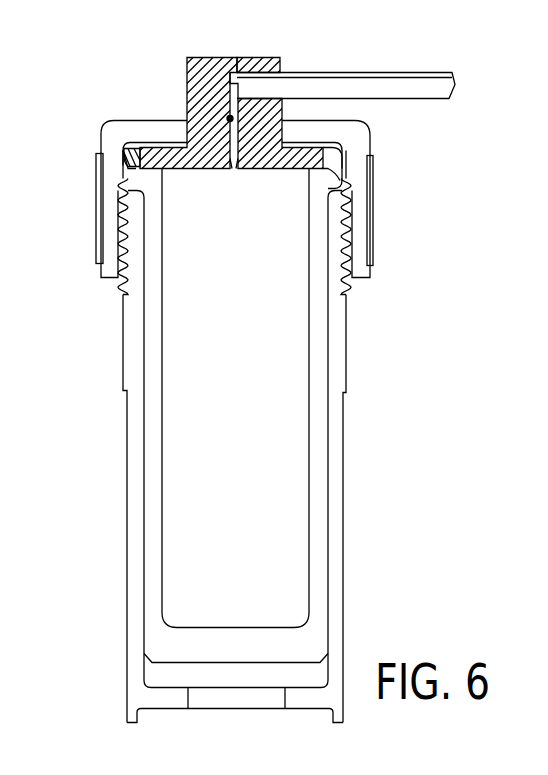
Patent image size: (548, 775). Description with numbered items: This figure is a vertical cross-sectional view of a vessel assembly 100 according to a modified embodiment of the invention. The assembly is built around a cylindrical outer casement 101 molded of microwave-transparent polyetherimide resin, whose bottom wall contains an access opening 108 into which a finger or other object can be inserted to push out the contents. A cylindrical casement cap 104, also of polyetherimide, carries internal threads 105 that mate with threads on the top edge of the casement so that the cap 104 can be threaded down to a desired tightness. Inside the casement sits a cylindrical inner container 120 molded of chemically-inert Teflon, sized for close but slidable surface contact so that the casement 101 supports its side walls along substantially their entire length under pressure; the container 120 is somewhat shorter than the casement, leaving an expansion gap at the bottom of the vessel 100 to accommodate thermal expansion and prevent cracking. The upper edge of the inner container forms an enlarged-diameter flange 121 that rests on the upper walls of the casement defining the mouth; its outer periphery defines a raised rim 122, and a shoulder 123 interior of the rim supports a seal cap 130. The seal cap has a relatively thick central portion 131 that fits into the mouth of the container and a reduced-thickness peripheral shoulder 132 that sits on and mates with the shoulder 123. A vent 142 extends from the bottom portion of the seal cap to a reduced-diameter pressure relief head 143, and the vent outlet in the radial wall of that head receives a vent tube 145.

The vessel assembly 100 is at (424, 364).
The outer casement 101 is at (343, 522).
The casement cap 104 is at (366, 135).
The internal threads 105 is at (118, 202).
The access opening 108 is at (282, 708).
The inner container 120 is at (322, 437).
The flange 121 is at (337, 170).
The raised rim 122 is at (124, 148).
The shoulder 123 is at (140, 157).
The seal cap 130 is at (197, 113).
The central portion 131 is at (210, 168).
The peripheral shoulder 132 is at (336, 188).
The vent 142 is at (228, 115).
The pressure relief head 143 is at (272, 60).
The vent tube 145 is at (372, 72).